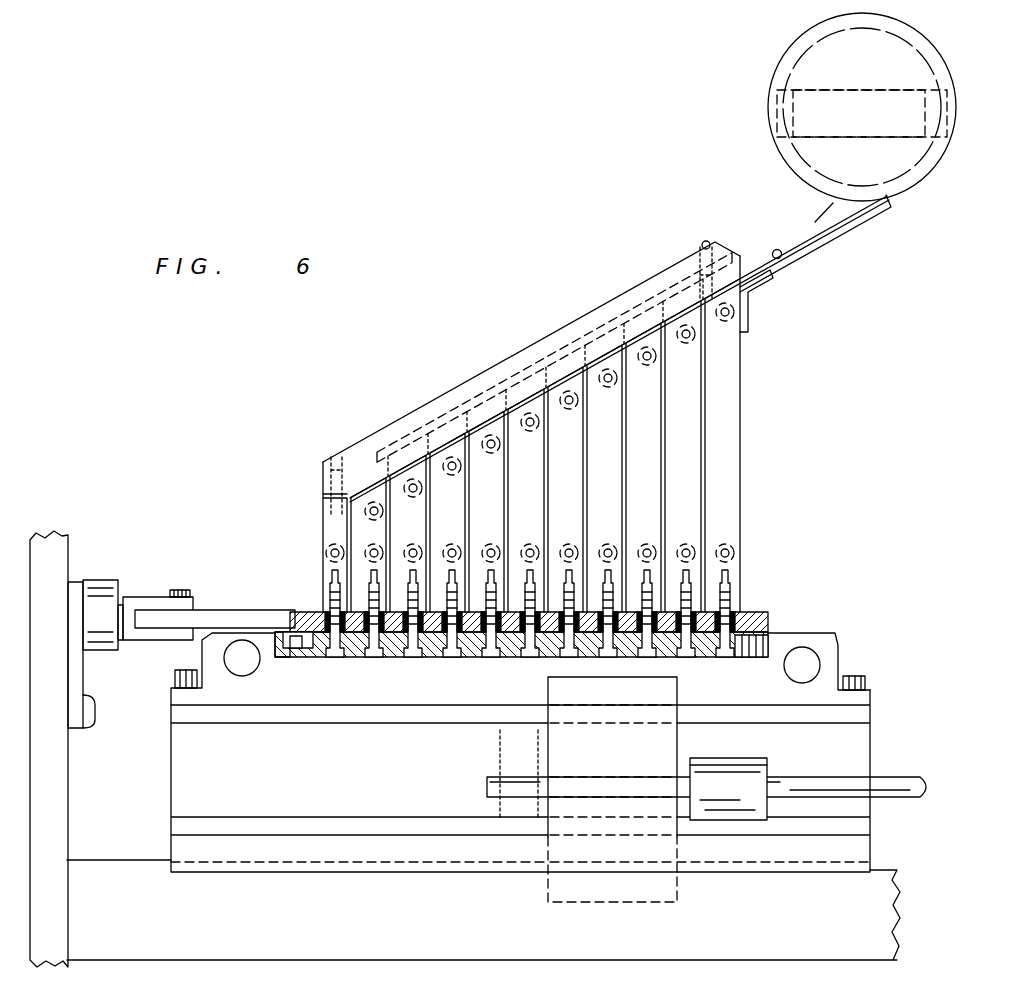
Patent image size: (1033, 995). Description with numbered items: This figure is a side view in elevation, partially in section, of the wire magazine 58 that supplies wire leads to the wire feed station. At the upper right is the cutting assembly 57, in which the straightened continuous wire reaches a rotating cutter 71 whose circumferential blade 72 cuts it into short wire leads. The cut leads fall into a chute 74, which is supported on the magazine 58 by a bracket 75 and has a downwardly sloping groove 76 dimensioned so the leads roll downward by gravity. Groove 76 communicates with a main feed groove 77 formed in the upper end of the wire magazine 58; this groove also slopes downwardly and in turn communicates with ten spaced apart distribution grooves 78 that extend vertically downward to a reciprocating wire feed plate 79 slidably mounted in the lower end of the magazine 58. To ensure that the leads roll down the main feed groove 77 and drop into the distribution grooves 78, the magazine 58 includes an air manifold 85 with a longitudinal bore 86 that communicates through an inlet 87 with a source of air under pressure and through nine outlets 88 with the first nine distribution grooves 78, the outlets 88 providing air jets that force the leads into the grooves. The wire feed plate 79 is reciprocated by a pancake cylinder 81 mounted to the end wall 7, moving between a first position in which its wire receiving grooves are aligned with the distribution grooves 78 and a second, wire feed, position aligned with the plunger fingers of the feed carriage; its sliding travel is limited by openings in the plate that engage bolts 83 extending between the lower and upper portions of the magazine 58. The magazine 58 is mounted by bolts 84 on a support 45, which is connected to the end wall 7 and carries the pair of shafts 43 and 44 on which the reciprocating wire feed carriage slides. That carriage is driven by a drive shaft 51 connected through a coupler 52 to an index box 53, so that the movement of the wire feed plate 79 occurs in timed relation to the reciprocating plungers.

The end wall 7 is at (57, 548).
The shaft 43 is at (828, 652).
The shaft 44 is at (241, 677).
The support 45 is at (392, 718).
The drive shaft 51 is at (842, 776).
The coupler 52 is at (735, 820).
The index box 53 is at (577, 903).
The roller 57 is at (821, 114).
The wire magazine 58 is at (742, 458).
The rotating cutter 71 is at (822, 88).
The blade 72 is at (776, 110).
The chute 74 is at (838, 232).
The bracket 75 is at (748, 313).
The groove 76 is at (782, 254).
The main feed groove 77 is at (610, 345).
The distribution grooves 78 is at (665, 412).
The wire feed plate 79 is at (215, 610).
The pancake cylinder 81 is at (100, 580).
The bolts 83 is at (368, 606).
The bolts 84 is at (276, 640).
The air manifold 85 is at (456, 386).
The longitudinal bore 86 is at (520, 378).
The inlet 87 is at (707, 243).
The outlets 88 is at (430, 450).